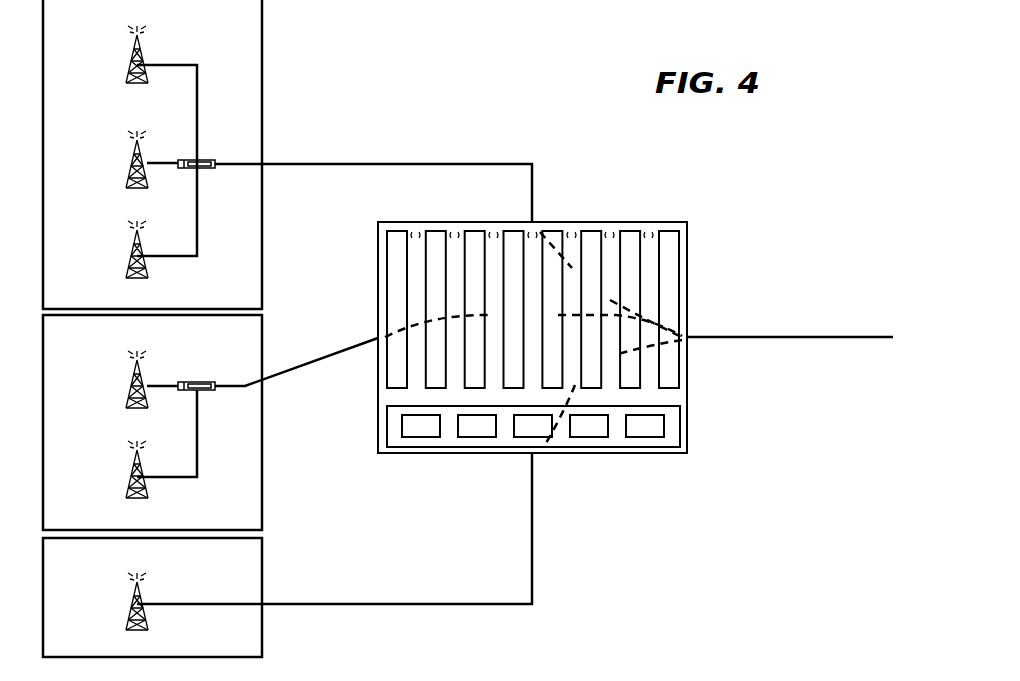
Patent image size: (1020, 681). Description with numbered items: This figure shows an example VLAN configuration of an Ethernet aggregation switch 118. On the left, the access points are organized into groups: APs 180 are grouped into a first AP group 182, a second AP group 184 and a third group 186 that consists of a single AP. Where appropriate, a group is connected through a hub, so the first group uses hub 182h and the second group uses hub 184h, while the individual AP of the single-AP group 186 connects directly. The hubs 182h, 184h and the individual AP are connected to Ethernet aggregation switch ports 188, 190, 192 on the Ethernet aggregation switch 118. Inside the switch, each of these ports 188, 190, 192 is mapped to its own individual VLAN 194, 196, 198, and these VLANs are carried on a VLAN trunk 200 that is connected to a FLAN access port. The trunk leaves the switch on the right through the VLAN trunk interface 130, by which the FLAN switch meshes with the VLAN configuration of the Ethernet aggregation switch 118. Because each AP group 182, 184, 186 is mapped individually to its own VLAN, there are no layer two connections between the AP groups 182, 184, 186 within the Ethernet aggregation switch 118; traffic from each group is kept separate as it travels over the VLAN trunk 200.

The Ethernet aggregation switch 118 is at (688, 430).
The VLAN trunk interface 130 is at (866, 334).
The AP 180 is at (130, 64).
The AP group 182 is at (262, 80).
The hub 182h is at (206, 158).
The AP group 184 is at (262, 483).
The hub 184h is at (212, 391).
The AP group 186 is at (262, 580).
The Ethernet aggregation switch port 188 is at (534, 226).
The Ethernet aggregation switch port 190 is at (378, 338).
The Ethernet aggregation switch port 192 is at (534, 455).
The VLAN 194 is at (572, 268).
The VLAN 196 is at (444, 320).
The VLAN 198 is at (575, 388).
The VLAN trunk 200 is at (690, 337).